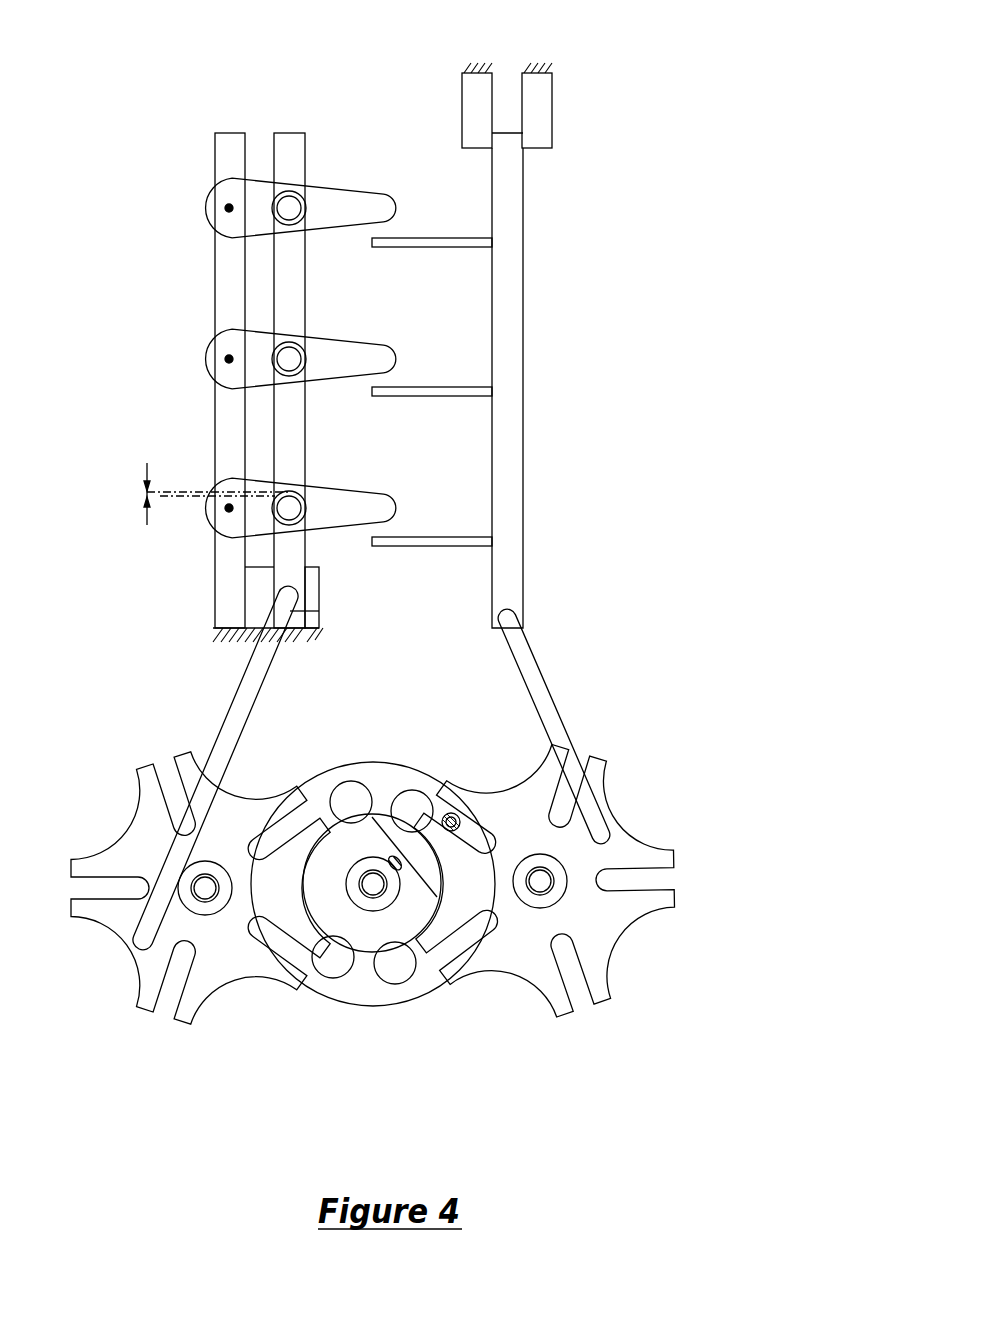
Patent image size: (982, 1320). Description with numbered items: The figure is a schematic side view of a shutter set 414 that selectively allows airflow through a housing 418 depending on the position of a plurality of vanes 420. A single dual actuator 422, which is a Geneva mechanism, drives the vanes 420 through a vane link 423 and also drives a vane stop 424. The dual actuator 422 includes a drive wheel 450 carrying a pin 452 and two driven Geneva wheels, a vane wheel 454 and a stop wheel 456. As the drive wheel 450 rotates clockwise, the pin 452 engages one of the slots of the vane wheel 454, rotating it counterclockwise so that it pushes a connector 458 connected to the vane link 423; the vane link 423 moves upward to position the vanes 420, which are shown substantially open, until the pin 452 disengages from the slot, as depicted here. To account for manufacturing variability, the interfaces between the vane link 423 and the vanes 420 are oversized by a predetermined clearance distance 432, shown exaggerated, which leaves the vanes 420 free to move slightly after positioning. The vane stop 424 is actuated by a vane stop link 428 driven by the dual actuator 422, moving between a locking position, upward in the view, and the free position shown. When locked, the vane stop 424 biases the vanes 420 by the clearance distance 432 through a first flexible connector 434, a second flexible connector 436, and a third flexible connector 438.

The shutter set 414 is at (732, 66).
The housing 418 is at (235, 142).
The vanes 420 is at (213, 205).
The dual actuator 422 is at (282, 1090).
The vane link 423 is at (290, 446).
The vane stop 424 is at (515, 290).
The vane stop link 428 is at (558, 718).
The predetermined clearance distance 432 is at (133, 482).
The first flexible connector 434 is at (430, 238).
The second flexible connector 436 is at (442, 388).
The third flexible connector 438 is at (452, 547).
The drive wheel 450 is at (387, 1003).
The pin 452 is at (452, 812).
The vane wheel 454 is at (125, 842).
The stop wheel 456 is at (607, 934).
The connector 458 is at (228, 745).